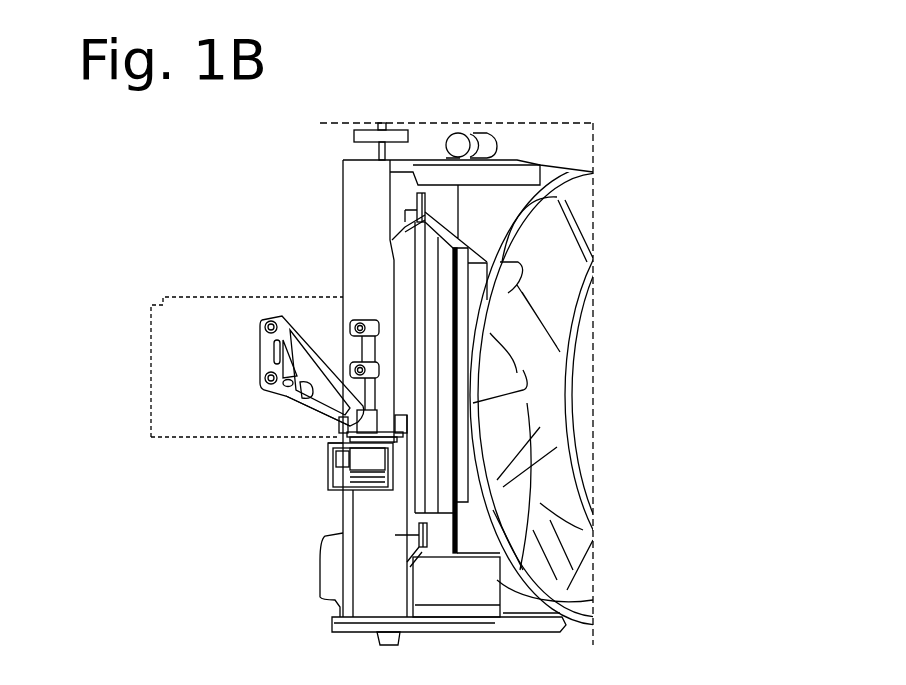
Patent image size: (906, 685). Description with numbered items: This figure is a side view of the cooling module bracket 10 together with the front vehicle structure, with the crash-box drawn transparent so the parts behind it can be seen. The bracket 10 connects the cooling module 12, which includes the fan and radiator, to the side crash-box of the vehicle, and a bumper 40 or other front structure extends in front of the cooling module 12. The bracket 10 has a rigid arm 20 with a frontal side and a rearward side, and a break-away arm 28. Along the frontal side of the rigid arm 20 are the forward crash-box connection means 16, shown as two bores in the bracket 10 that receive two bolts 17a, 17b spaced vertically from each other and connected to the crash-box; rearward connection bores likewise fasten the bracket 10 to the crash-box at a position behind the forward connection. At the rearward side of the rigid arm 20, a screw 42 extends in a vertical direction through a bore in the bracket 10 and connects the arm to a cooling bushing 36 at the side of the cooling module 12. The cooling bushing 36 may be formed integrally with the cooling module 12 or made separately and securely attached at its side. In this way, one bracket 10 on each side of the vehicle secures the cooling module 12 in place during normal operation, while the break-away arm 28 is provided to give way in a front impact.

The cooling module bracket 10 is at (308, 424).
The cooling module 12 is at (604, 328).
The forward crash-box connection means 16 is at (276, 312).
The bolt 17a is at (266, 321).
The bolt 17b is at (264, 374).
The rigid arm 20 is at (287, 402).
The break-away arm 28 is at (380, 392).
The cooling bushing 36 is at (358, 463).
The bumper 40 is at (137, 381).
The screw 42 is at (384, 422).